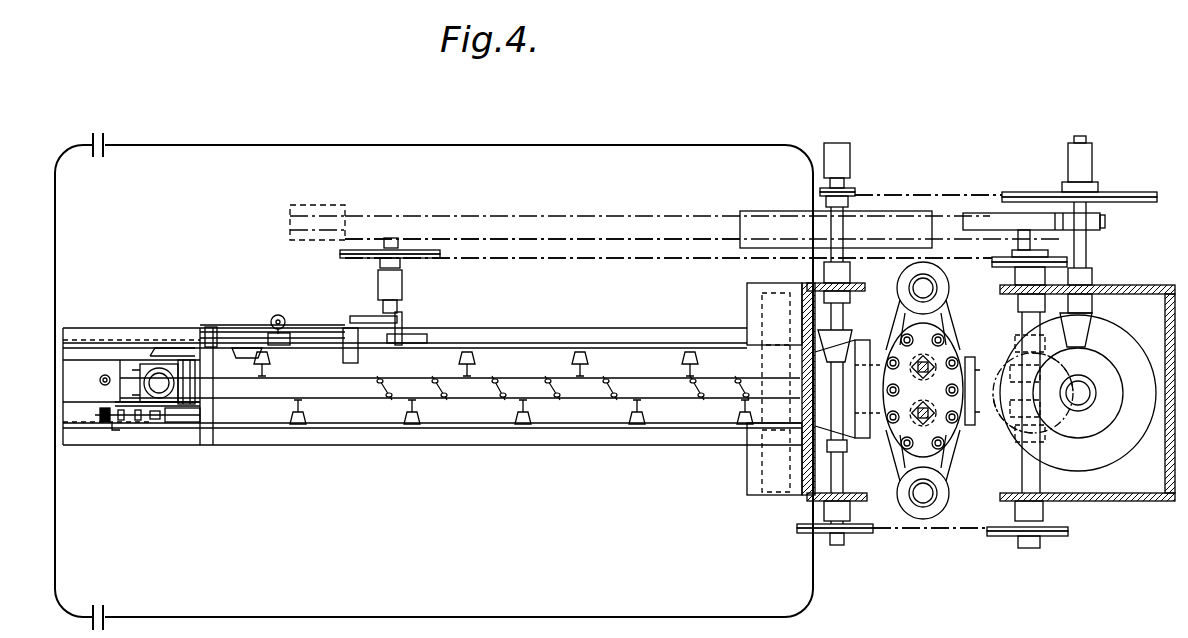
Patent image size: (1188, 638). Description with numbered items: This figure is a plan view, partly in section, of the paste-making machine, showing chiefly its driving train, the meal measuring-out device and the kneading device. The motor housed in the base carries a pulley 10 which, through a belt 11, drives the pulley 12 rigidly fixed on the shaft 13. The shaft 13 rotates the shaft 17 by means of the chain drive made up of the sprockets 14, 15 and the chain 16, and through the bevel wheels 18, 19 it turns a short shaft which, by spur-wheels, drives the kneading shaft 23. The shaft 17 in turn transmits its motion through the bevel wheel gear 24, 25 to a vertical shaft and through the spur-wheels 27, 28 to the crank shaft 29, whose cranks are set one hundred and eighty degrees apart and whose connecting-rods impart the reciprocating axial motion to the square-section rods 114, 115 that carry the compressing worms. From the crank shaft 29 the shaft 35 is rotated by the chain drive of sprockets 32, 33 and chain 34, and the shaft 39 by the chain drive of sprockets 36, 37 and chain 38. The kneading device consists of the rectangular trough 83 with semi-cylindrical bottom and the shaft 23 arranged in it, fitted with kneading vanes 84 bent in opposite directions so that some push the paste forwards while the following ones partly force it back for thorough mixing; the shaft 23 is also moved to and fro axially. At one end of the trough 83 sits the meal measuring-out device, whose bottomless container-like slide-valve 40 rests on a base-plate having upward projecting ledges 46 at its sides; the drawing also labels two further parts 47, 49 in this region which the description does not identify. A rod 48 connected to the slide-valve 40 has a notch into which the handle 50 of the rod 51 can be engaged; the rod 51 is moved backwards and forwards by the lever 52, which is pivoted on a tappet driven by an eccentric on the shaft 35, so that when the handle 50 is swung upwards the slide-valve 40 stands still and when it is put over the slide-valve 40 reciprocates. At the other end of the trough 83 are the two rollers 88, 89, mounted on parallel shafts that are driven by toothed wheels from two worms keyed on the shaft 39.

The pulley 10 is at (300, 205).
The belt 11 is at (600, 214).
The pulley 12 is at (880, 212).
The shaft 13 is at (840, 143).
The chain drive sprocket 14 is at (855, 192).
The chain drive sprocket 15 is at (1127, 192).
The chain 16 is at (940, 195).
The shaft 17 is at (1080, 136).
The bevel wheel 18 is at (840, 338).
The bevel wheel 19 is at (858, 372).
The shaft 23 is at (624, 378).
The bevel wheel 24 is at (1080, 330).
The bevel wheel 25 is at (1122, 440).
The spur-wheel 27 is at (1105, 223).
The spur-wheel 28 is at (983, 213).
The crank shaft 29 is at (1040, 250).
The chain drive sprocket 32 is at (992, 256).
The chain drive sprocket 33 is at (428, 258).
The chain 34 is at (526, 260).
The shaft 35 is at (392, 237).
The chain drive sprocket 36 is at (1058, 538).
The chain drive sprocket 37 is at (860, 534).
The chain 38 is at (955, 530).
The shaft 39 is at (837, 546).
The container-like slide-valve 40 is at (140, 366).
The upward projecting ledges 46 is at (100, 340).
The adjusting mechanism 47 is at (100, 425).
The rod 48 is at (160, 345).
The pad 49 is at (248, 348).
The handle 50 is at (278, 315).
The rod 51 is at (308, 330).
The lever 52 is at (404, 319).
The trough 83 is at (345, 425).
The kneading vanes 84 is at (421, 409).
The roller 88 is at (775, 495).
The roller 89 is at (778, 295).
The rod 114 is at (930, 418).
The rod 115 is at (932, 362).